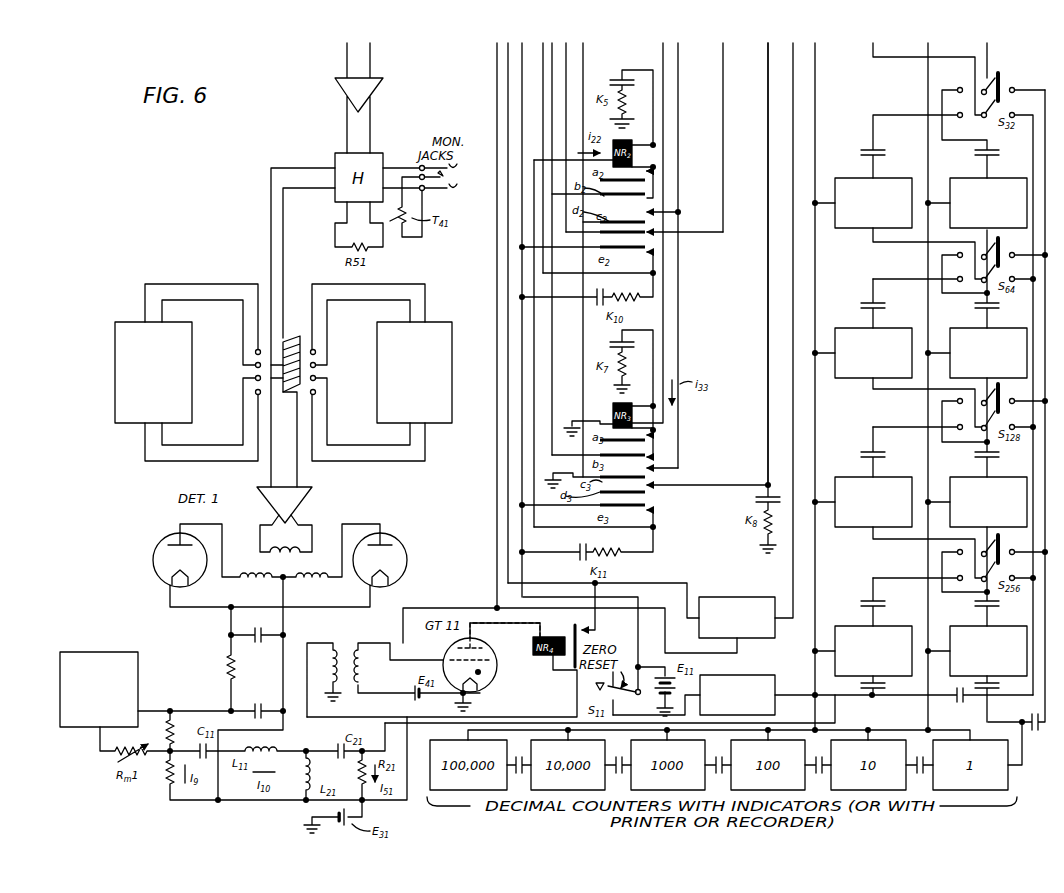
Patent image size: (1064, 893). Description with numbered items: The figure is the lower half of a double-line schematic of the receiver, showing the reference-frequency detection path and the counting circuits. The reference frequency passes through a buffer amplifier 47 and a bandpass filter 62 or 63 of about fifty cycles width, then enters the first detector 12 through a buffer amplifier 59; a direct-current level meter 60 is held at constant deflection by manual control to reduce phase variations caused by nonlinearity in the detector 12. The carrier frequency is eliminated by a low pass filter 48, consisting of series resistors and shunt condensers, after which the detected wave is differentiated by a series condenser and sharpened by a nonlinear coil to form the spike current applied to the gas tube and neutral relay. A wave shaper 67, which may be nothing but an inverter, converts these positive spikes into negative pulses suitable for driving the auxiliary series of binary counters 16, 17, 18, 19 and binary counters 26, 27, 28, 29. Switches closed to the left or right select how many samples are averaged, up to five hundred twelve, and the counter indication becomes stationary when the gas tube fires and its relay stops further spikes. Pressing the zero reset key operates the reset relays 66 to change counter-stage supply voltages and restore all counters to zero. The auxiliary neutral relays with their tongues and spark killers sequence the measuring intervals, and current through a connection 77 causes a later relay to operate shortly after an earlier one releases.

The buffer amplifier 47 is at (374, 84).
The bandpass filter 62 is at (115, 370).
The bandpass filter 63 is at (452, 348).
The buffer amplifier 59 is at (305, 495).
The detector 12 is at (247, 543).
The direct-current level meter 60 is at (60, 700).
The low pass filter 48 is at (310, 745).
The wave shaper 67 is at (745, 597).
The reset relays 66 is at (762, 676).
The connection 77 is at (768, 328).
The binary counter 16 is at (873, 203).
The binary counter 17 is at (873, 353).
The binary counter 18 is at (873, 502).
The binary counter 19 is at (873, 651).
The binary counter 26 is at (988, 203).
The binary counter 27 is at (988, 353).
The binary counter 28 is at (988, 502).
The binary counter 29 is at (988, 651).